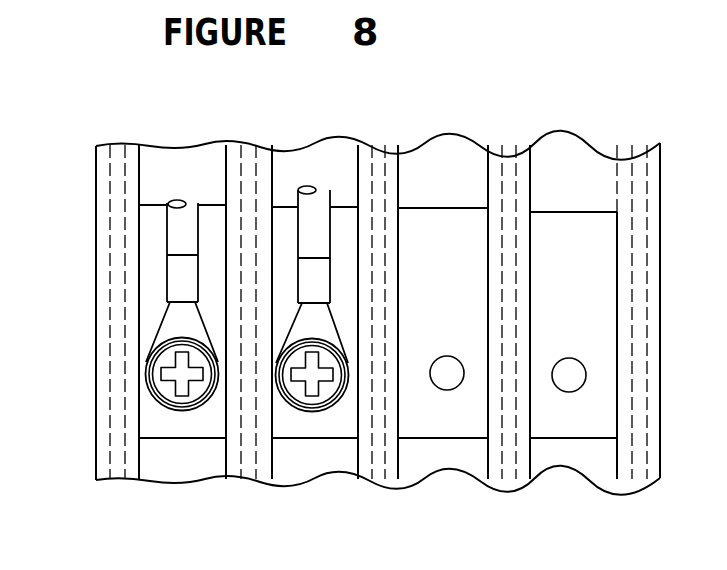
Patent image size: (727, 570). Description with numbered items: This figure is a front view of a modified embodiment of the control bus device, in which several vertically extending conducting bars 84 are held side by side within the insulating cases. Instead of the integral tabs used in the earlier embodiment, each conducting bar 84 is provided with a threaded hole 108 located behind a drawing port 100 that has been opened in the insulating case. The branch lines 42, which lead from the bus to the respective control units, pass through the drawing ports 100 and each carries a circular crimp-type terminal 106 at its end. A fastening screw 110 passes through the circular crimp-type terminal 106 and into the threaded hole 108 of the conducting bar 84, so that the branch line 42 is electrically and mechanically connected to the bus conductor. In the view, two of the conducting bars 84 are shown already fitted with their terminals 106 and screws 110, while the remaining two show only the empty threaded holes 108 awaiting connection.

The conducting bar 84 is at (158, 176).
The drawing port 100 is at (220, 205).
The branch line 42 is at (177, 227).
The circular crimp-type terminal 106 is at (170, 320).
The threaded hole 108 is at (443, 370).
The fastening screw 110 is at (175, 395).